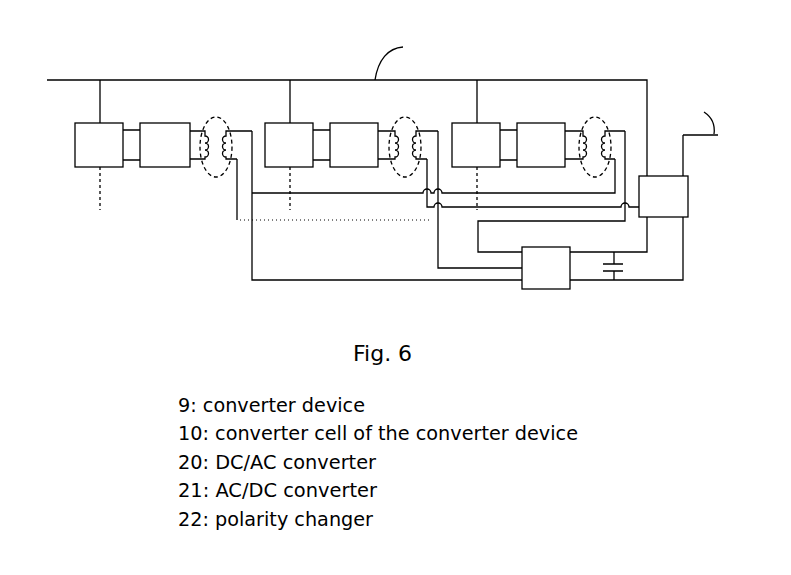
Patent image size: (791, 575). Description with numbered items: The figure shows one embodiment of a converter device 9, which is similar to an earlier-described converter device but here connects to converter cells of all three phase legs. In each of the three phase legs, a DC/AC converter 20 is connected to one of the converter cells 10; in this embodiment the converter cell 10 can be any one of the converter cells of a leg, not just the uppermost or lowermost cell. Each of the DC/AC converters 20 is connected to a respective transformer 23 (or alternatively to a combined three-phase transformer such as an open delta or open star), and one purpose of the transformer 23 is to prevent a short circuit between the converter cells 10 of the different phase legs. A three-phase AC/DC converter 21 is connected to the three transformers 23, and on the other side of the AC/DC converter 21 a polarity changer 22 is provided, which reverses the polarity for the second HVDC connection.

The converter device 9 is at (578, 20).
The converter cell 10 is at (488, 153).
The DC/AC converter 20 is at (553, 153).
The AC/DC converter 21 is at (534, 278).
The polarity changer 22 is at (651, 207).
The transformer 23 is at (227, 128).